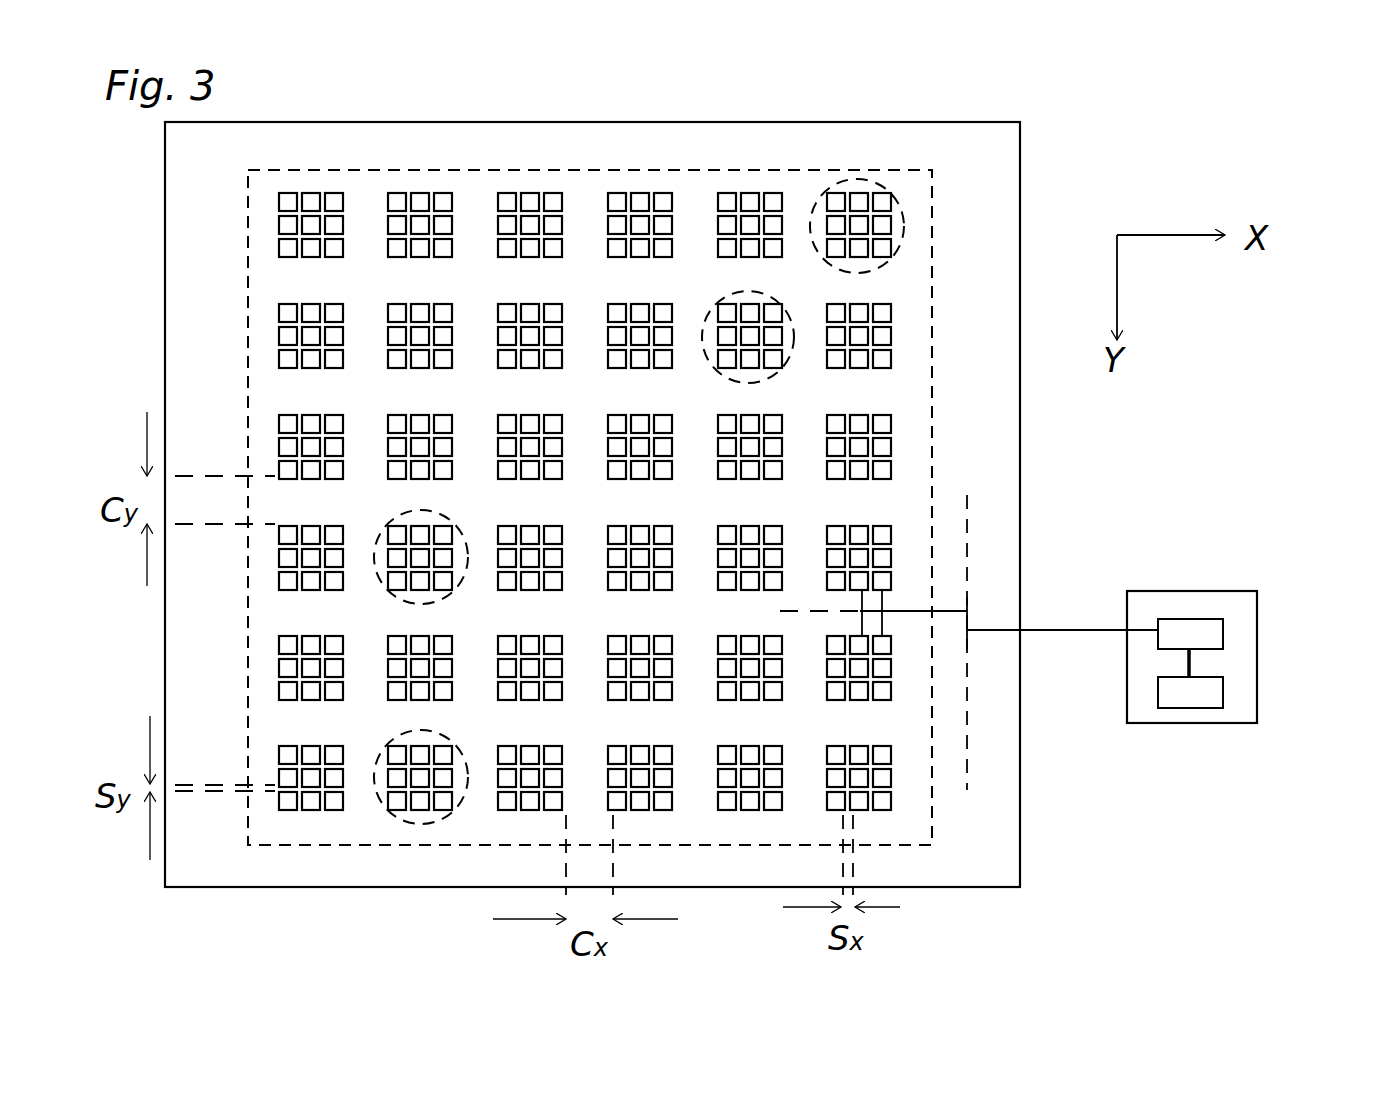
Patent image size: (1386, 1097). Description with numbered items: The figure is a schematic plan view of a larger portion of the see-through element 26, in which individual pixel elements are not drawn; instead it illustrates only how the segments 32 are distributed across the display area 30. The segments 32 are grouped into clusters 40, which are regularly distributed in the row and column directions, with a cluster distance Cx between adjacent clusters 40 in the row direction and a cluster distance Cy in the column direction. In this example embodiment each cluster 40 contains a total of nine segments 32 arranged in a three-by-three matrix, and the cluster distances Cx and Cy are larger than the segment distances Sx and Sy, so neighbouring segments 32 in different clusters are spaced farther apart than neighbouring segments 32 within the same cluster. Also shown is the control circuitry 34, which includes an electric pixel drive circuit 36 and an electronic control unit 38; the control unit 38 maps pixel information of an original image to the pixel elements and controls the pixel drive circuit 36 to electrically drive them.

The see-through element 26 is at (1012, 146).
The display area 30 is at (915, 170).
The segment 32 is at (310, 426).
The control circuitry 34 is at (1260, 606).
The electric pixel drive circuit 36 is at (1226, 642).
The electronic control unit 38 is at (1223, 695).
The cluster 40 is at (770, 297).